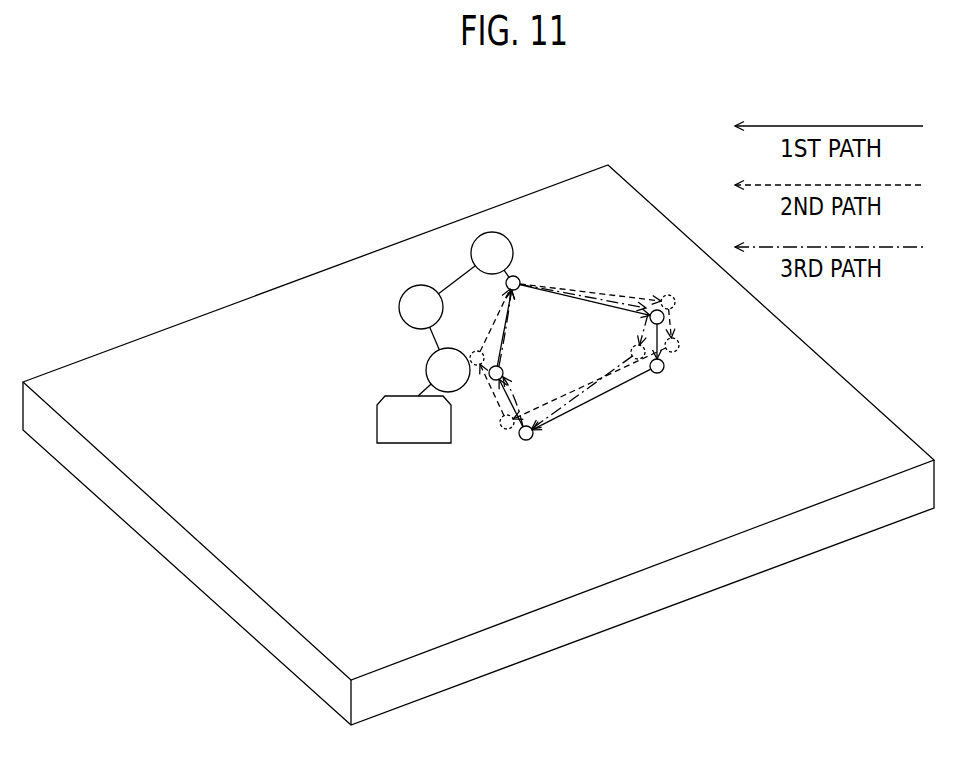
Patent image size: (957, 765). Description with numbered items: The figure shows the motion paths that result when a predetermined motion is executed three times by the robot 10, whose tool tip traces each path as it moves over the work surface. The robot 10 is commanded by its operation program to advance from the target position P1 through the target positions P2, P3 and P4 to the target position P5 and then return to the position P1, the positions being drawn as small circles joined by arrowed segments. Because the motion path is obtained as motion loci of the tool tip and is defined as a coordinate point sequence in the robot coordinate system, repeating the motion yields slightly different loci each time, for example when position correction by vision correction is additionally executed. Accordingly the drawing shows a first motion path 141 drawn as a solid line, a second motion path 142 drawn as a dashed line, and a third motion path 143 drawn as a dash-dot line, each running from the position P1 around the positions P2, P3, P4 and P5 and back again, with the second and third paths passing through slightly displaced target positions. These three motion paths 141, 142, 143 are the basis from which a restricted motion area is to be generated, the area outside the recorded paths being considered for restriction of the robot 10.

The robot 10 is at (443, 270).
The first motion path 141 is at (565, 417).
The second motion path 142 is at (605, 390).
The third motion path 143 is at (643, 383).
The target position P1 is at (532, 273).
The target position P2 is at (672, 296).
The target position P3 is at (668, 363).
The target position P4 is at (526, 443).
The target position P5 is at (510, 360).